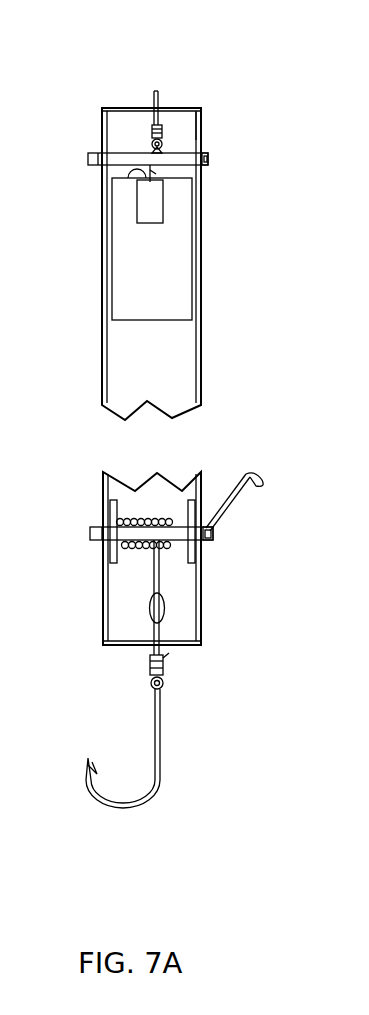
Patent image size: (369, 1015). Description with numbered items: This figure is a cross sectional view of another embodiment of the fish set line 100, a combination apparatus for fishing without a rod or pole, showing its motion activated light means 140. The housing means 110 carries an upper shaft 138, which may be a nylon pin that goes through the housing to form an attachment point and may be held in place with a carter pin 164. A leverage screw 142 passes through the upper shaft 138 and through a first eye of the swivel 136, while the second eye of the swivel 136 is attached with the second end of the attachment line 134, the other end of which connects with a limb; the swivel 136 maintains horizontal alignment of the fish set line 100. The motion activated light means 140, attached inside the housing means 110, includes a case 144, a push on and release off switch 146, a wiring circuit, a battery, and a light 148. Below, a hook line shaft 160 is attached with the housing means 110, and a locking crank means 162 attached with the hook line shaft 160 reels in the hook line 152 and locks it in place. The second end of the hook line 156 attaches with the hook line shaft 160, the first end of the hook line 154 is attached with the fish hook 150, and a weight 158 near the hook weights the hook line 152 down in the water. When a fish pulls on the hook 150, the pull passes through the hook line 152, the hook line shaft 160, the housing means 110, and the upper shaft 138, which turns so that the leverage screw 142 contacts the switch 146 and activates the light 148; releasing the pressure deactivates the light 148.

The fish set line 100 is at (153, 864).
The housing means 110 is at (200, 359).
The second end of the attachment line 134 is at (152, 130).
The swivel 136 is at (161, 132).
The upper shaft 138 is at (190, 135).
The motion activated light means 140 is at (213, 263).
The leverage screw 142 is at (152, 166).
The case 144 is at (170, 300).
The push on and release off switch 146 is at (160, 213).
The light 148 is at (137, 168).
The fish hook 150 is at (158, 758).
The hook line 152 is at (158, 580).
The first end of the hook line 154 is at (167, 677).
The second end of the hook line 156 is at (143, 518).
The weight 158 is at (165, 617).
The hook line shaft 160 is at (177, 532).
The locking crank means 162 is at (228, 502).
The carter pin 164 is at (182, 161).